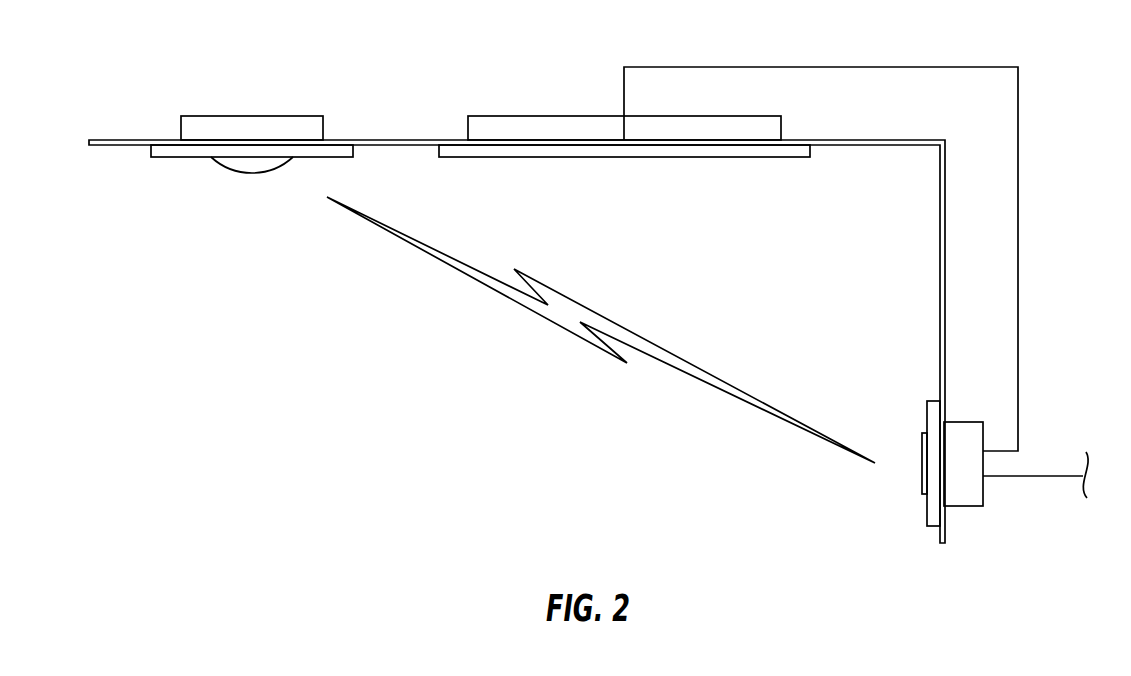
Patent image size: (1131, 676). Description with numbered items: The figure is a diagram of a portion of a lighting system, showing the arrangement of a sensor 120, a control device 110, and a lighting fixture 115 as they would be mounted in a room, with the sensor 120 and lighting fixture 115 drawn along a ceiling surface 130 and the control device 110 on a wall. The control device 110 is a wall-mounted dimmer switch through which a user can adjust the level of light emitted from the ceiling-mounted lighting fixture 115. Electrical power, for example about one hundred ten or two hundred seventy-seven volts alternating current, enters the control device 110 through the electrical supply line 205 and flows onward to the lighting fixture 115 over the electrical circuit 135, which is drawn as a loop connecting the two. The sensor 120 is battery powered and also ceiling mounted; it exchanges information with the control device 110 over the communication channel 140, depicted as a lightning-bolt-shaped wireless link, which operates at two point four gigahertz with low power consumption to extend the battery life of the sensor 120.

The control device 110 is at (926, 517).
The lighting fixture 115 is at (524, 115).
The sensor 120 is at (252, 175).
The circuit board 130 is at (517, 341).
The electrical circuit 135 is at (840, 66).
The communication channel 140 is at (559, 326).
The electrical supply line 205 is at (1047, 470).